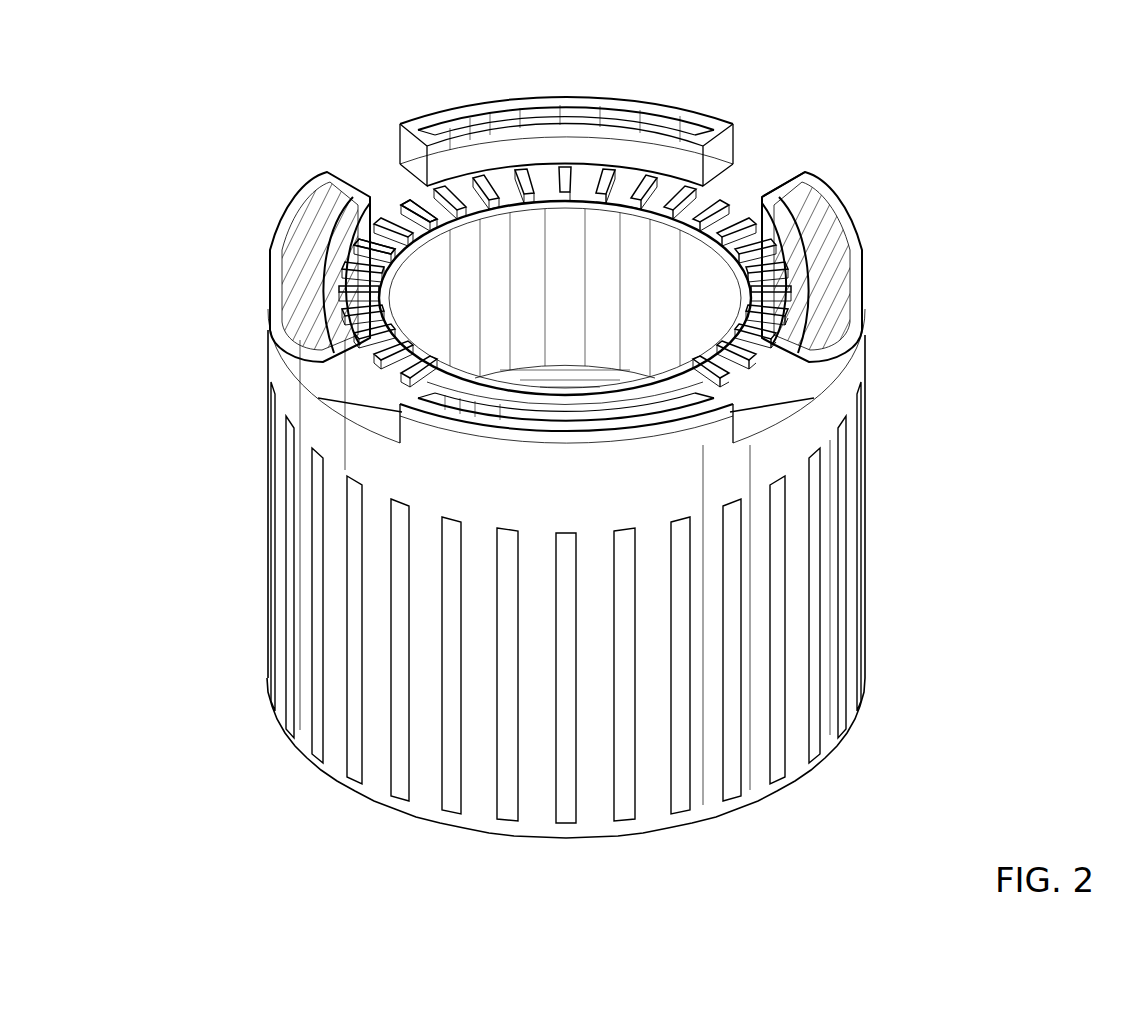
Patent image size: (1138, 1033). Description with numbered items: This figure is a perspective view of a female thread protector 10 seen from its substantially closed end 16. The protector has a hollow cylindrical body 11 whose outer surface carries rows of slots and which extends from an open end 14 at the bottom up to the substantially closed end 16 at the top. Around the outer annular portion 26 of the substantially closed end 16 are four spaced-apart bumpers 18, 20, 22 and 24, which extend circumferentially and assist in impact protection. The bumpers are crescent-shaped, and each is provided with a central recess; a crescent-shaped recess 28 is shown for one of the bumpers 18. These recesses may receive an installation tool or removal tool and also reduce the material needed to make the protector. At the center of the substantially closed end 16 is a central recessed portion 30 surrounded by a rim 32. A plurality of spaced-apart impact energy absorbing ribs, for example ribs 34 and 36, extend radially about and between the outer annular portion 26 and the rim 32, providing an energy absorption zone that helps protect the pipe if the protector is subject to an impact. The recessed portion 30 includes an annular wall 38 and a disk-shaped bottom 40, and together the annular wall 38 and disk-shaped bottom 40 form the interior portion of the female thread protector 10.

The female thread protector 10 is at (100, 84).
The hollow cylindrical body 11 is at (868, 540).
The open end 14 is at (752, 798).
The substantially closed end 16 is at (787, 190).
The bumper 18 is at (853, 237).
The bumper 20 is at (410, 428).
The bumper 22 is at (282, 239).
The bumper 24 is at (432, 123).
The outer annular portion 26 is at (773, 400).
The crescent-shaped recess 28 is at (818, 314).
The central recessed portion 30 is at (560, 248).
The rim 32 is at (388, 302).
The rib 34 is at (408, 222).
The rib 36 is at (440, 203).
The annular wall 38 is at (626, 245).
The disk-shaped bottom 40 is at (636, 378).